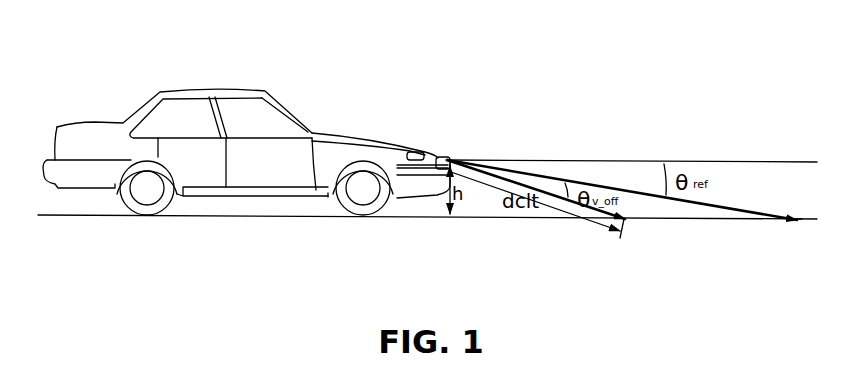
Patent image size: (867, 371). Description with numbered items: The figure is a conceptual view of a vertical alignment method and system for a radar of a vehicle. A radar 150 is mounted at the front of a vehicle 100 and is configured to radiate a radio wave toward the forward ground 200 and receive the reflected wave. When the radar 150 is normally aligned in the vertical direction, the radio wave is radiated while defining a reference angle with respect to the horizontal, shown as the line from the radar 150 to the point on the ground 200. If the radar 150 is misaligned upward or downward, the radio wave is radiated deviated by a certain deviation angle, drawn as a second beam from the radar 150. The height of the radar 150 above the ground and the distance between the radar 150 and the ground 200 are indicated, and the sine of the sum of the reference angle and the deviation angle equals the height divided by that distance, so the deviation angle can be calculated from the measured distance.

The vehicle 100 is at (238, 90).
The radar 150 is at (440, 157).
The forward ground 200 is at (807, 222).